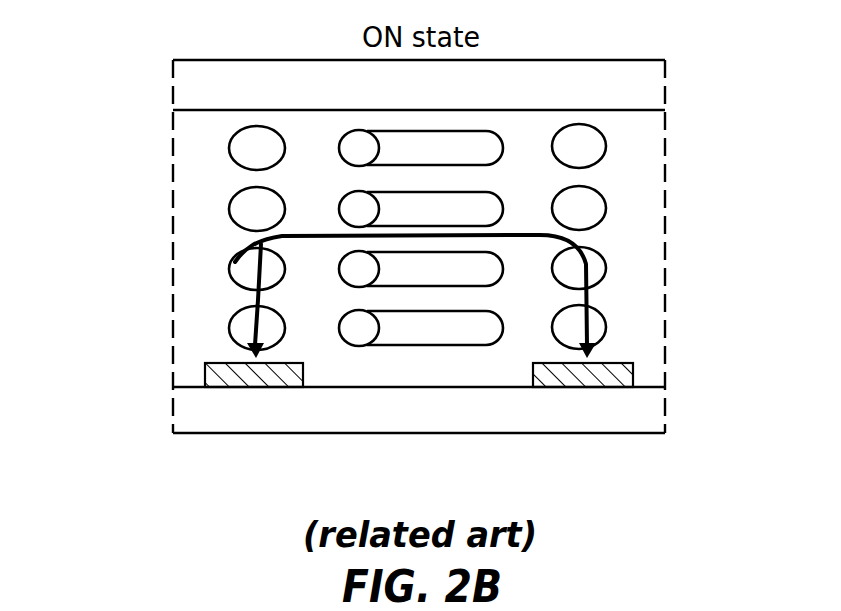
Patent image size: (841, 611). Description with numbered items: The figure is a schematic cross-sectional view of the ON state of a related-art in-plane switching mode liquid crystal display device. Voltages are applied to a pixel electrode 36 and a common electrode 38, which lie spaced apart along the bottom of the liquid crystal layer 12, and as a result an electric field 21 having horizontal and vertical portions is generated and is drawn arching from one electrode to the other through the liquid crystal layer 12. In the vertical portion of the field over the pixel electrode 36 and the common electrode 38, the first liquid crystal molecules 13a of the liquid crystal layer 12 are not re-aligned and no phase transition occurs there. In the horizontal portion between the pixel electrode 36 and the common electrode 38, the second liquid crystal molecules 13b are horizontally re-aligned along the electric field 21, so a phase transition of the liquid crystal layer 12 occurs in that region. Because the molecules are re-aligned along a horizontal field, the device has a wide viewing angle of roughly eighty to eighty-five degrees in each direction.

The liquid crystal layer 12 is at (668, 108).
The first liquid crystal molecules 13a is at (247, 213).
The second liquid crystal molecules 13b is at (352, 202).
The electric field 21 is at (310, 233).
The pixel electrode 36 is at (265, 387).
The common electrode 38 is at (583, 387).